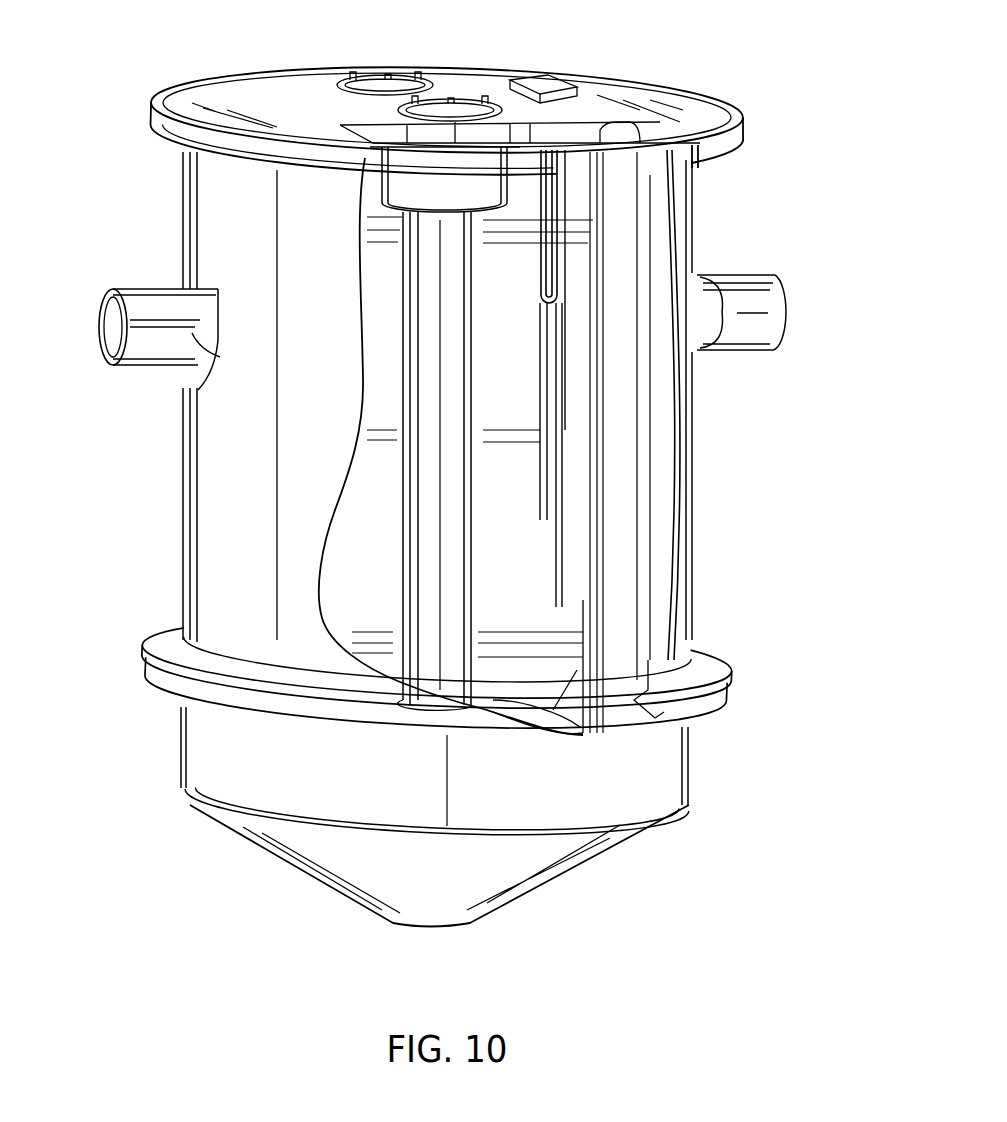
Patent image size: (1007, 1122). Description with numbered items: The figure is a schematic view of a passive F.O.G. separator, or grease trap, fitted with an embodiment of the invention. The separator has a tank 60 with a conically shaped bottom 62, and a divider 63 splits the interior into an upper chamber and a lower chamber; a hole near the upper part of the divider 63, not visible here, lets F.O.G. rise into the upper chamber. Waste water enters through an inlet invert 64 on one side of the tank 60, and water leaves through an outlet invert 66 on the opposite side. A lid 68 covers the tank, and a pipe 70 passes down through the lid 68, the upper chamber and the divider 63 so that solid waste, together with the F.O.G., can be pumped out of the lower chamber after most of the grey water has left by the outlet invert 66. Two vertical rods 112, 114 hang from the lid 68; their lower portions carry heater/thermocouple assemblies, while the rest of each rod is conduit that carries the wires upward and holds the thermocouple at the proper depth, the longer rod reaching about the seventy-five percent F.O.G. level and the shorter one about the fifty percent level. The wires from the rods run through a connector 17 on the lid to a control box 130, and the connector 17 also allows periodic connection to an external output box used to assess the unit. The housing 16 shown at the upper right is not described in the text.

The housing 16 is at (680, 103).
The connector 17 is at (562, 75).
The tank 60 is at (667, 532).
The conically shaped bottom 62 is at (563, 873).
The divider 63 is at (577, 670).
The inlet invert 64 is at (143, 288).
The outlet invert 66 is at (755, 272).
The lid 68 is at (218, 88).
The pipe 70 is at (427, 290).
The vertical rod 112 is at (547, 347).
The vertical rod 114 is at (540, 413).
The control box 130 is at (533, 80).